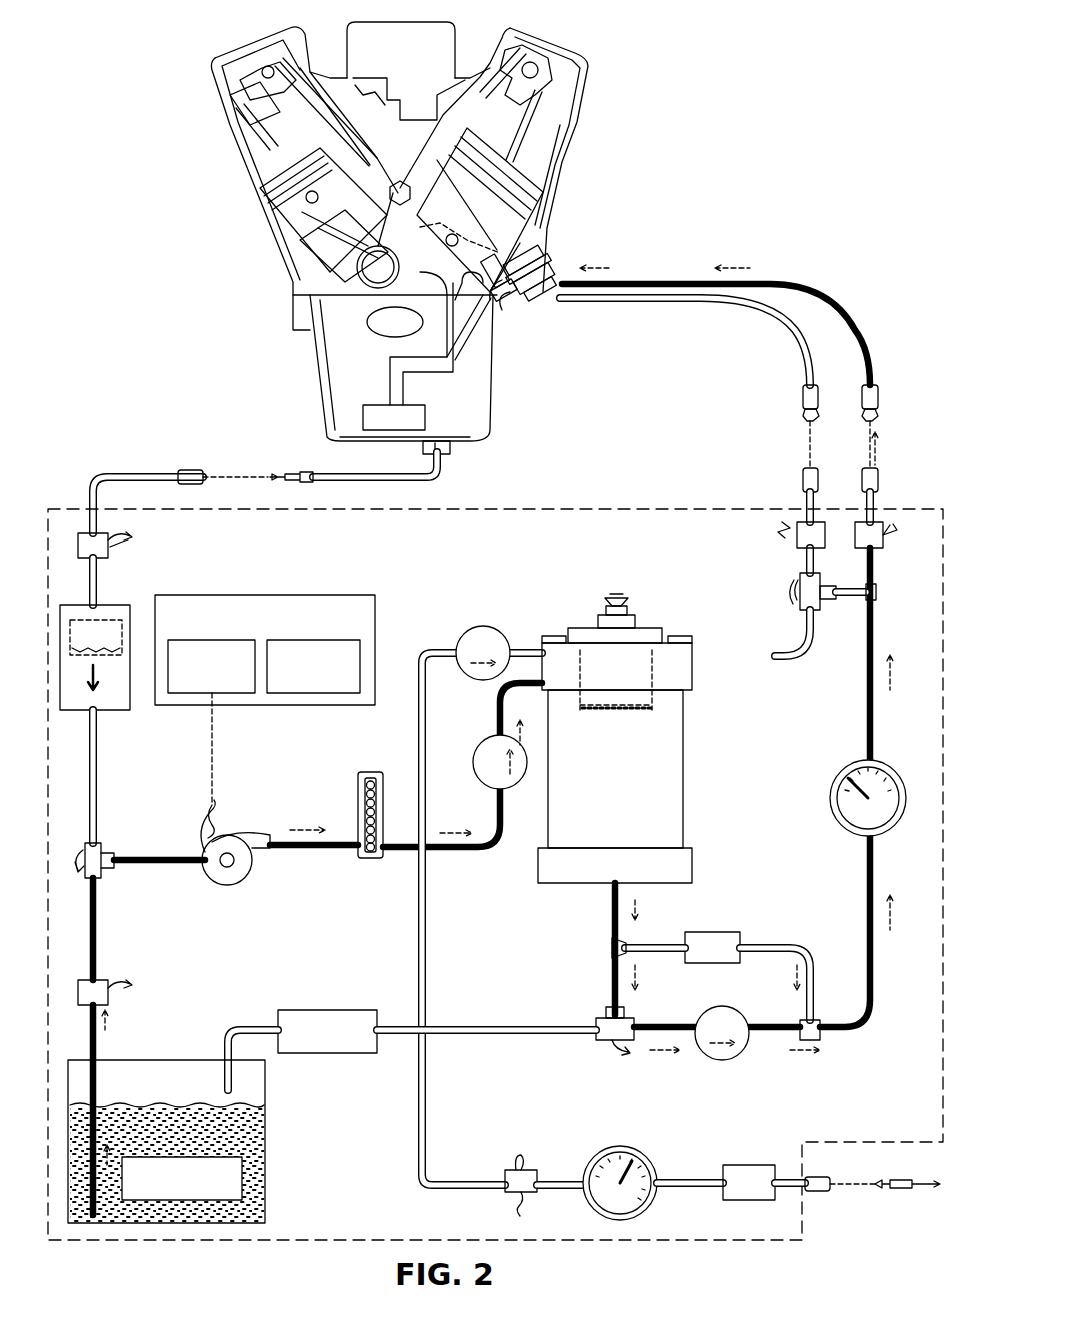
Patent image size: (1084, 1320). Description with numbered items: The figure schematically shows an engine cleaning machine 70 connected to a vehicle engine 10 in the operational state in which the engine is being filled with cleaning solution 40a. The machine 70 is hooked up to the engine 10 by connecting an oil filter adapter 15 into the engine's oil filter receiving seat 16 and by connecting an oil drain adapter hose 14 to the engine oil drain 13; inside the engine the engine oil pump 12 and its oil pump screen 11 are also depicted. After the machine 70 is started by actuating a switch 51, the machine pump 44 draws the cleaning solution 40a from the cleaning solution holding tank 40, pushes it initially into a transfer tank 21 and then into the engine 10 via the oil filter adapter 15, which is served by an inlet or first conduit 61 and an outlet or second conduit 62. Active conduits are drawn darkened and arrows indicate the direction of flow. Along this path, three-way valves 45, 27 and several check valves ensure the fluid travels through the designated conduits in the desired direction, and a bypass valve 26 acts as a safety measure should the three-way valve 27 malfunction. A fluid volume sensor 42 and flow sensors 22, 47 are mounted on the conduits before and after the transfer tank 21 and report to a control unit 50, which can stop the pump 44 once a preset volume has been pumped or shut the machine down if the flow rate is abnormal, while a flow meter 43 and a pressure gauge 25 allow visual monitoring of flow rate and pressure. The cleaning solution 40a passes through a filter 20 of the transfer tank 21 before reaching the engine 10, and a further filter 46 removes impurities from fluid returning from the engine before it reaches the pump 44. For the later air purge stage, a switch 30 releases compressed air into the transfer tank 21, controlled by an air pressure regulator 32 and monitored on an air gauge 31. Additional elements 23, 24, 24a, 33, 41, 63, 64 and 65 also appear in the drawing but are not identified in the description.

The vehicle engine 10 is at (208, 150).
The oil pump screen 11 is at (366, 434).
The engine oil pump 12 is at (430, 416).
The engine oil drain 13 is at (458, 453).
The oil drain adapter hose 14 is at (370, 490).
The oil filter adapter 15 is at (572, 245).
The oil filter receiving seat 16 is at (542, 232).
The filter 20 is at (630, 720).
The transfer tank 21 is at (626, 780).
The flow sensor 22 is at (855, 522).
The vent valve 23 is at (624, 600).
The return line 24 is at (815, 620).
The tee fitting 24a is at (790, 568).
The pressure gauge 25 is at (830, 797).
The bypass valve 26 is at (718, 930).
The 3-way valve 27 is at (600, 1018).
The switch 30 is at (514, 1162).
The air gauge 31 is at (628, 1146).
The air pressure regulator 32 is at (753, 1163).
The compressed air connection 33 is at (891, 1213).
The cleaning solution holding tank 40 is at (272, 1088).
The cleaning solution 40a is at (200, 1189).
The filter 41 is at (320, 1012).
The fluid volume sensor 42 is at (110, 996).
The flow meter 43 is at (358, 805).
The machine pump 44 is at (230, 840).
The 3-way valve 45 is at (100, 878).
The filter 46 is at (106, 652).
The flow sensor 47 is at (112, 548).
The control unit 50 is at (345, 600).
The switch 51 is at (228, 700).
The inlet conduit 61 is at (790, 280).
The outlet conduit 62 is at (748, 322).
The waste oil line 63 is at (98, 957).
The pump outlet line 64 is at (450, 850).
The bypass line 65 is at (425, 948).
The engine cleaning machine 70 is at (572, 490).